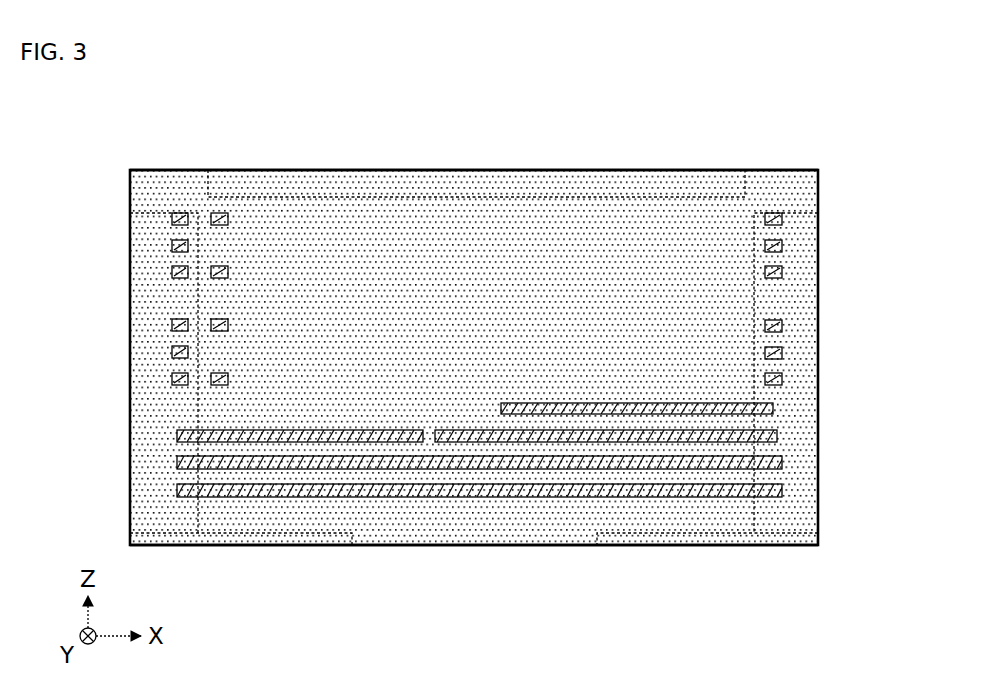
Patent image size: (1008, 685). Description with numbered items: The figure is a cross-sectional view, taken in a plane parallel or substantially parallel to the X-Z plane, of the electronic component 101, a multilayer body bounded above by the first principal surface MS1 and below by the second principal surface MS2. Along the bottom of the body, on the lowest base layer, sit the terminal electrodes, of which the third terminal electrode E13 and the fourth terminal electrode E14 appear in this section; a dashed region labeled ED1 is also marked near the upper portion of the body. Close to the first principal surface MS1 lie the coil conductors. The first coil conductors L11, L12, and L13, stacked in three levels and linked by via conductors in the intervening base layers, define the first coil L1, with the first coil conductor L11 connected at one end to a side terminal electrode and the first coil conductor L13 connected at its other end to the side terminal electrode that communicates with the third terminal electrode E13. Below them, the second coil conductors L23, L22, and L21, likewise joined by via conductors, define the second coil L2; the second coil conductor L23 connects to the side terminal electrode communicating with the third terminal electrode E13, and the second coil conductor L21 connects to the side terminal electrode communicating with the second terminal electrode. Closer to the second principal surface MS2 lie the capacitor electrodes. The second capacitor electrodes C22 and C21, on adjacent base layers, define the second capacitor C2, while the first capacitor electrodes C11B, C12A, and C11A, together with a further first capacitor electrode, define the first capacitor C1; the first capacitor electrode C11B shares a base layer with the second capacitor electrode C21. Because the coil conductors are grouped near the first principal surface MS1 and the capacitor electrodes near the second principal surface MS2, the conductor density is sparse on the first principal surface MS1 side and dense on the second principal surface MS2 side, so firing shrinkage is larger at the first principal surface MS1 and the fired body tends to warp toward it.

The electronic component 101 is at (291, 104).
The first principal surface MS1 is at (470, 158).
The second principal surface MS2 is at (470, 562).
The first electrode / dielectric region ED1 is at (556, 193).
The third terminal electrode E13 is at (253, 548).
The fourth terminal electrode E14 is at (707, 548).
The first coil L1 is at (120, 213).
The second coil L2 is at (120, 320).
The first coil conductor L11 is at (783, 219).
The first coil conductor L12 is at (783, 246).
The first coil conductor L13 is at (783, 272).
The second coil conductor L21 is at (783, 380).
The second coil conductor L22 is at (783, 353).
The second coil conductor L23 is at (783, 326).
The first capacitor C1 is at (480, 521).
The second capacitor C2 is at (477, 430).
The first capacitor electrode C11A is at (783, 490).
The first capacitor electrode C11B is at (380, 436).
The first capacitor electrode C12A is at (783, 462).
The second capacitor electrode C21 is at (778, 436).
The second capacitor electrode C22 is at (774, 408).